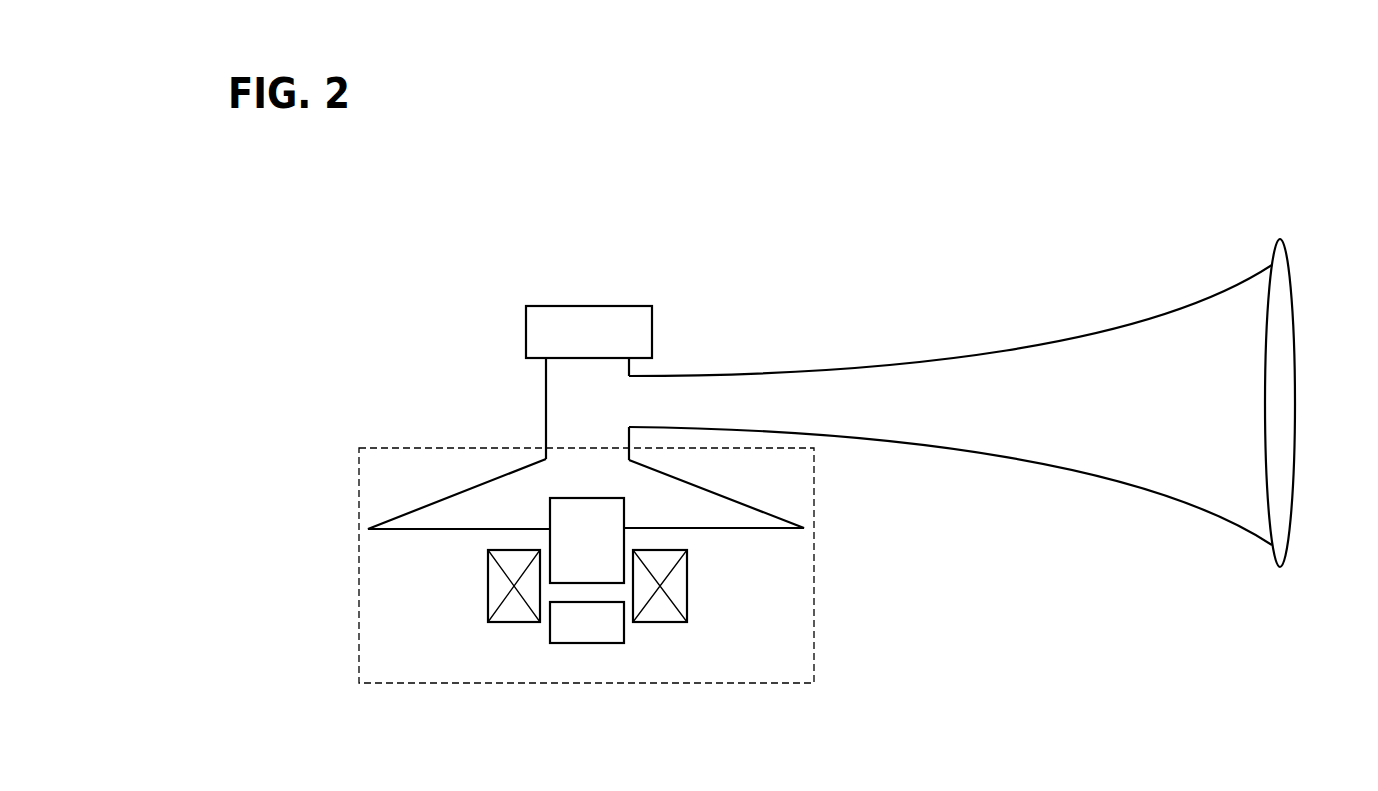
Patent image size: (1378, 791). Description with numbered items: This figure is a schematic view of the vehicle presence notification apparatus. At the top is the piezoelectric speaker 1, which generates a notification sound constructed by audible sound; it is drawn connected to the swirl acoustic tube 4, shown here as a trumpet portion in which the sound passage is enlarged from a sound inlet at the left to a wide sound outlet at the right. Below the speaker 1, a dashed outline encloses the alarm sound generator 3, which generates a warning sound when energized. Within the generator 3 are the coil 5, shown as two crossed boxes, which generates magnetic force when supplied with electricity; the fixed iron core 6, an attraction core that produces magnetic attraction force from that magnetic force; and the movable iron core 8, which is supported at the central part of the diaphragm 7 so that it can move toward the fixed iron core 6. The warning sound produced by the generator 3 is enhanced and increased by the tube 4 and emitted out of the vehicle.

The piezoelectric speaker 1 is at (612, 306).
The alarm sound generator 3 is at (815, 597).
The swirl acoustic tube 4 is at (1067, 338).
The coil 5 is at (488, 583).
The fixed iron core 6 is at (583, 643).
The diaphragm 7 is at (733, 532).
The movable iron core 8 is at (625, 515).